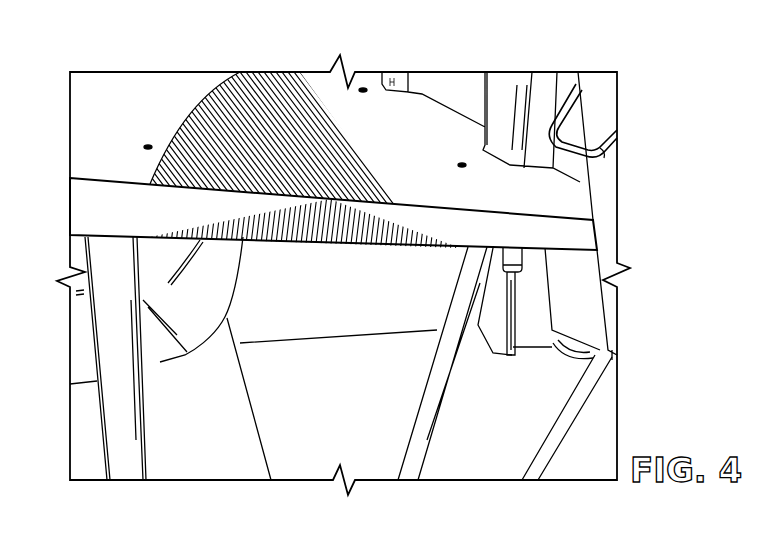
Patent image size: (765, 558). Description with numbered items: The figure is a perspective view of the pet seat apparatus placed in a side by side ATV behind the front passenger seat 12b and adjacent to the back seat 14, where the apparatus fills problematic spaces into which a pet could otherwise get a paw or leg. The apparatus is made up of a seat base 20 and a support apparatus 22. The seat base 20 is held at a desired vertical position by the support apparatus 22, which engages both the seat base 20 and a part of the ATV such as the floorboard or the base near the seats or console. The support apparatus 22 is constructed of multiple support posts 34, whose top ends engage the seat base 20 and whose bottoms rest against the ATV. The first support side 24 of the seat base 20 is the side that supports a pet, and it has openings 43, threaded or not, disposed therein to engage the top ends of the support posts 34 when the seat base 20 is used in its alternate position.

The front passenger seat 12b is at (478, 92).
The back seat 14 is at (171, 286).
The seat base 20 is at (147, 177).
The support apparatus 22 is at (187, 425).
The first support side 24 is at (213, 108).
The support post 34 is at (123, 387).
The opening 43 is at (148, 145).